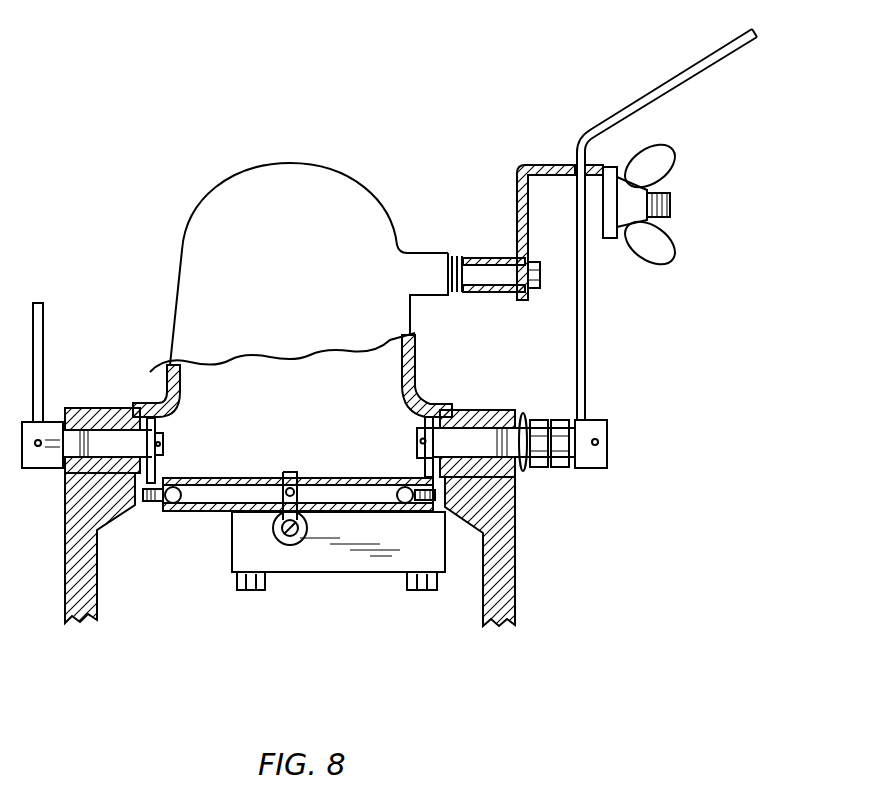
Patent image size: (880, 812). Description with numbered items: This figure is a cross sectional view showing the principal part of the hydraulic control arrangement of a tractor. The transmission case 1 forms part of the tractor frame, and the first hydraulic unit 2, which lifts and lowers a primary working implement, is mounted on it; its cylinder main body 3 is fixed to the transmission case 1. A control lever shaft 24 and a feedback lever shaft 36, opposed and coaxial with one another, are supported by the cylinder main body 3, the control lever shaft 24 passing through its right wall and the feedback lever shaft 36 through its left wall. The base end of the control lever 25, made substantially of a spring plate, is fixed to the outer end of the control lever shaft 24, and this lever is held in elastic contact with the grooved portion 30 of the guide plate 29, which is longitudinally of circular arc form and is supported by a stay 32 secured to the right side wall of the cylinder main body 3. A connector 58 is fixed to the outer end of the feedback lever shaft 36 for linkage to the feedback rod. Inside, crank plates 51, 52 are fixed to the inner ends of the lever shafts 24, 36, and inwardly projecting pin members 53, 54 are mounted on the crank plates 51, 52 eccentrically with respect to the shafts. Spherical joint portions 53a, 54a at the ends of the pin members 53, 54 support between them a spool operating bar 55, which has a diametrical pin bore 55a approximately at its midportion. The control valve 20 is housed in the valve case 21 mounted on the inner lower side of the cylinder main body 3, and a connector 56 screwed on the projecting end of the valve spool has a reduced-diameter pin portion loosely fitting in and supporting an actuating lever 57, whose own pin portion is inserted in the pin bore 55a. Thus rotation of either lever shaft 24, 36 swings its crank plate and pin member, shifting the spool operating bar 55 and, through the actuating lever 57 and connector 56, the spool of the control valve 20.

The transmission case 1 is at (65, 585).
The first hydraulic unit 2 is at (388, 212).
The cylinder main body 3 is at (209, 206).
The control valve 20 is at (324, 572).
The valve case 21 is at (367, 558).
The control lever shaft 24 is at (470, 438).
The control lever 25 is at (585, 325).
The guide plate 29 is at (560, 165).
The grooved portion 30 is at (600, 165).
The stay 32 is at (517, 220).
The feedback lever shaft 36 is at (108, 435).
The crank plate 51 is at (423, 462).
The crank plate 52 is at (153, 470).
The pin member 53 is at (447, 510).
The spherical joint portion 53a is at (395, 500).
The pin member 54 is at (158, 503).
The spherical joint portion 54a is at (176, 505).
The spool operating bar 55 is at (345, 480).
The pin bore 55a is at (290, 478).
The connector 56 is at (282, 538).
The actuating lever 57 is at (296, 494).
The connector 58 is at (43, 358).